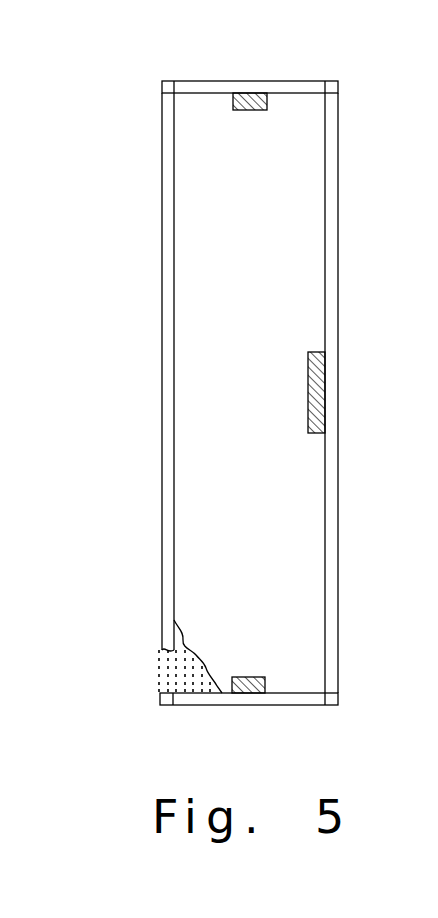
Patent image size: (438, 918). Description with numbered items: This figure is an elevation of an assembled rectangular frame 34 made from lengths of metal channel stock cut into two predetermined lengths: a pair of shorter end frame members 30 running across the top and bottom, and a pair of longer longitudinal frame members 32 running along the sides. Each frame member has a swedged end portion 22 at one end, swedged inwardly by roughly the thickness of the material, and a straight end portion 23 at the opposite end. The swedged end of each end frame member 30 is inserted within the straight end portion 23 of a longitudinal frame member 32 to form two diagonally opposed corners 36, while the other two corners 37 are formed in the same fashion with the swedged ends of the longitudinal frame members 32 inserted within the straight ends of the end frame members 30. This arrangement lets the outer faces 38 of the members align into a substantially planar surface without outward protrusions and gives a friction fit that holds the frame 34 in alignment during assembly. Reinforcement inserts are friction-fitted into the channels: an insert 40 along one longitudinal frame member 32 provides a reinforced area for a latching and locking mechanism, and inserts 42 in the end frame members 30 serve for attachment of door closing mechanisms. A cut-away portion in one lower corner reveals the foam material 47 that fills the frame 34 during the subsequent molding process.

The swedged end portion 22 is at (173, 707).
The straight end portion 23 is at (163, 88).
The end frame member 30 is at (218, 81).
The longitudinal frame member 32 is at (162, 330).
The rectangular frame 34 is at (344, 161).
The corner 36 is at (162, 81).
The corner 37 is at (339, 81).
The outer face 38 is at (277, 87).
The reinforcement insert 40 is at (308, 403).
The reinforcement insert 42 is at (247, 677).
The foam material 47 is at (192, 658).